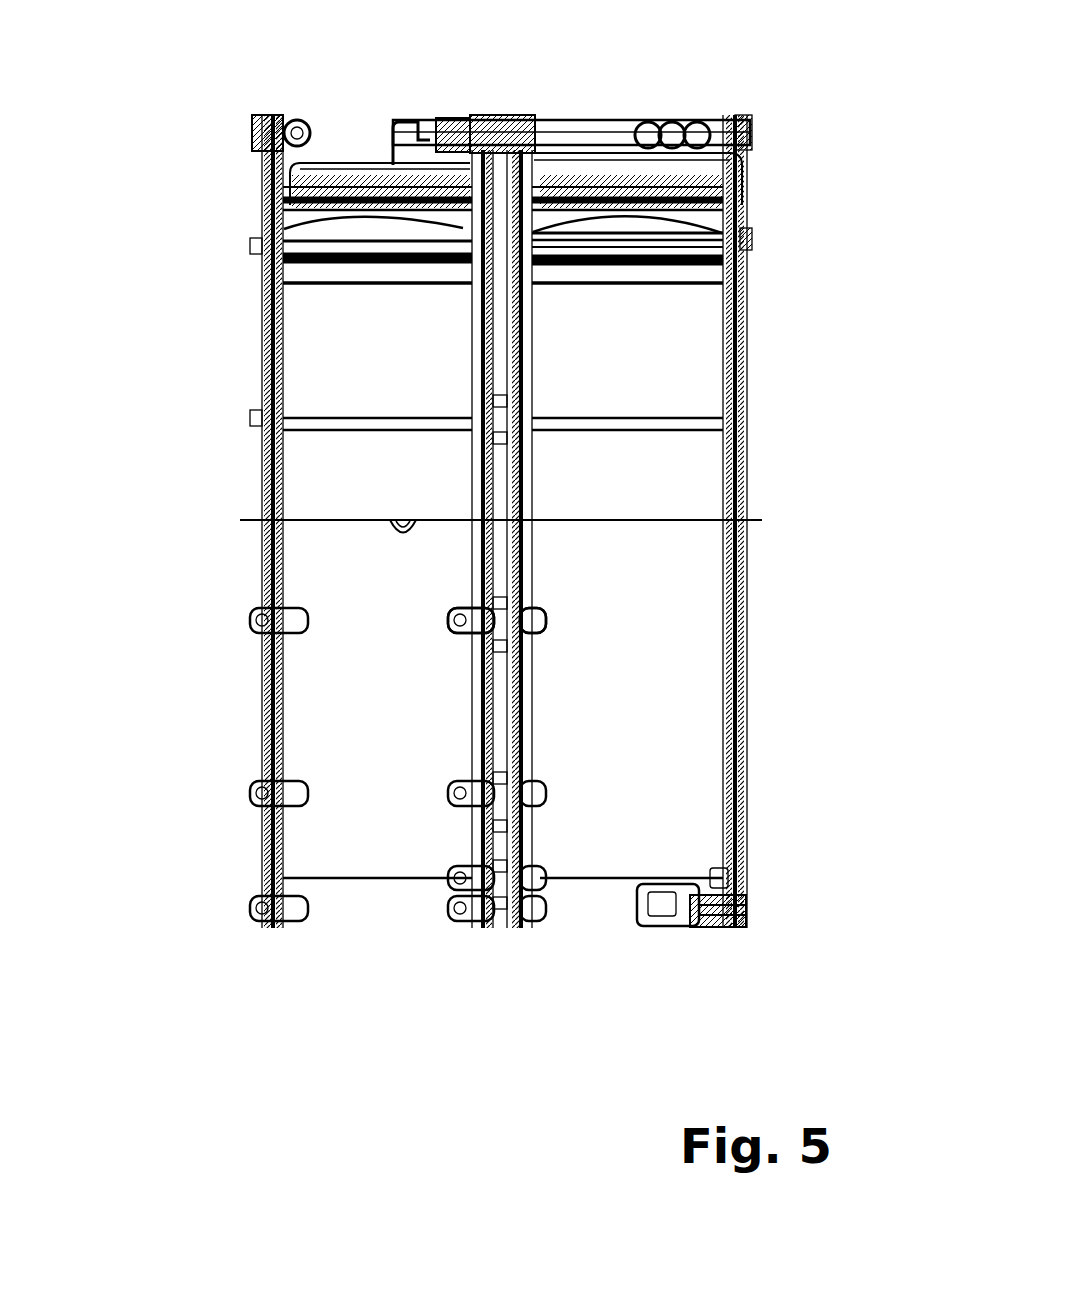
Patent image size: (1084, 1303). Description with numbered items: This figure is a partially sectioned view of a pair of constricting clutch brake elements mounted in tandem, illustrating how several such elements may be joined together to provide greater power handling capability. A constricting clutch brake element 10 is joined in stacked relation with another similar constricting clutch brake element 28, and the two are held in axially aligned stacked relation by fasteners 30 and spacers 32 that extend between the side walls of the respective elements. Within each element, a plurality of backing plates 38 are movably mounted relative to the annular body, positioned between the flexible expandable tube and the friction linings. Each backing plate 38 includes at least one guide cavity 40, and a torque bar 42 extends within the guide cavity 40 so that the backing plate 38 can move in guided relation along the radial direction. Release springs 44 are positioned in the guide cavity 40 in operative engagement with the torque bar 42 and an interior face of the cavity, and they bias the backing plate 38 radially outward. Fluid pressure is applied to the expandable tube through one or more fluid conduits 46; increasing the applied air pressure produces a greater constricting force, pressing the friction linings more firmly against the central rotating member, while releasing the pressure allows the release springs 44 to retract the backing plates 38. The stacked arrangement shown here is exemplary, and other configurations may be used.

The constricting clutch brake element 10 is at (796, 856).
The constricting clutch brake element 28 is at (210, 997).
The fasteners 30 is at (540, 795).
The spacers 32 is at (497, 643).
The backing plates 38 is at (712, 198).
The guide cavity 40 is at (662, 930).
The torque bar 42 is at (722, 240).
The release springs 44 is at (620, 222).
The fluid conduits 46 is at (578, 127).